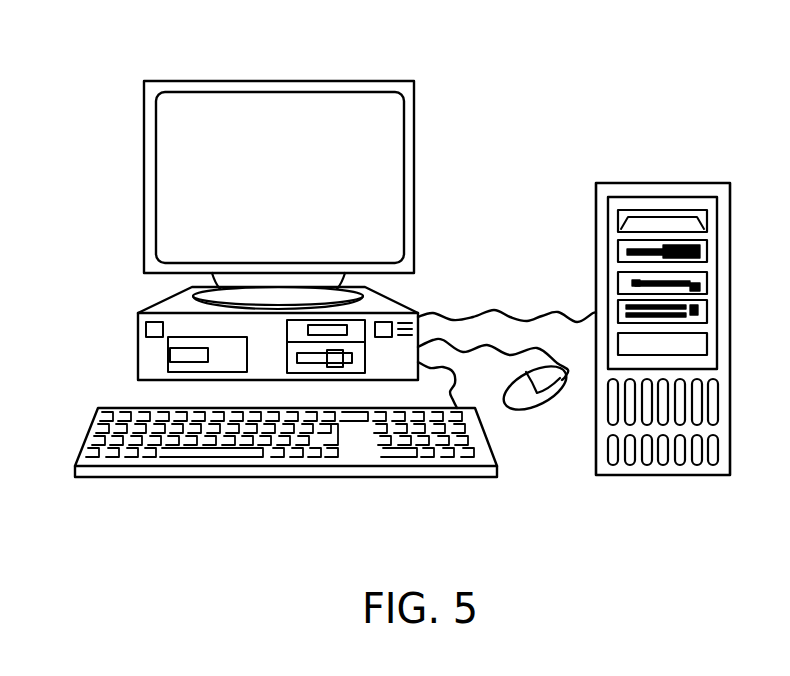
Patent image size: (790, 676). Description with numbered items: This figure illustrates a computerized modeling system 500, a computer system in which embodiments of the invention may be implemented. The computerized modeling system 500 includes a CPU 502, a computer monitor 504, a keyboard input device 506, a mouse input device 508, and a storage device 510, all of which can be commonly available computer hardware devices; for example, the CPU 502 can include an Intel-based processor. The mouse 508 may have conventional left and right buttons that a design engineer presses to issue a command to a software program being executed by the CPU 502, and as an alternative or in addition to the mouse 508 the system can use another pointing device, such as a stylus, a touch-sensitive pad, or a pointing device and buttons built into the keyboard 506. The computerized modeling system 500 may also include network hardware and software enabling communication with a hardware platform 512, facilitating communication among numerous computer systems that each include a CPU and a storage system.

The computerized modeling system 500 is at (470, 56).
The CPU 502 is at (273, 327).
The computer monitor 504 is at (392, 164).
The keyboard input device 506 is at (89, 430).
The mouse input device 508 is at (543, 407).
The storage device 510 is at (353, 348).
The hardware platform 512 is at (663, 183).